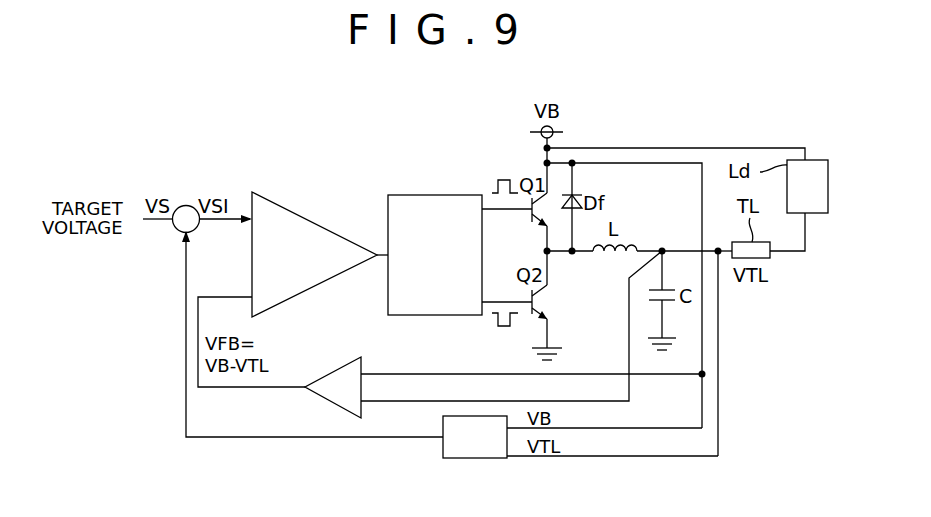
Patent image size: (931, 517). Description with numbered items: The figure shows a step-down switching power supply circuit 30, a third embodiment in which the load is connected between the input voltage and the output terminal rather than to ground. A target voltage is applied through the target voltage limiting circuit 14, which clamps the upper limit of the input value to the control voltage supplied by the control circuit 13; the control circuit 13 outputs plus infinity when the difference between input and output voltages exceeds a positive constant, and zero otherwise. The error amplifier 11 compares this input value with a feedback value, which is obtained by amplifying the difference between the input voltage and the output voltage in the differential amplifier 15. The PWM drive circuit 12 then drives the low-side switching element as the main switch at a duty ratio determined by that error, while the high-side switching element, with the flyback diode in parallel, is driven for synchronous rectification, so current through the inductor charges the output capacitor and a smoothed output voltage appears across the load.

The step-down switching power supply circuit 30 is at (273, 118).
The error amplifier 11 is at (290, 210).
The PWM drive circuit 12 is at (440, 195).
The control circuit 13 is at (492, 458).
The target voltage limiting circuit 14 is at (188, 205).
The differential amplifier 15 is at (332, 372).